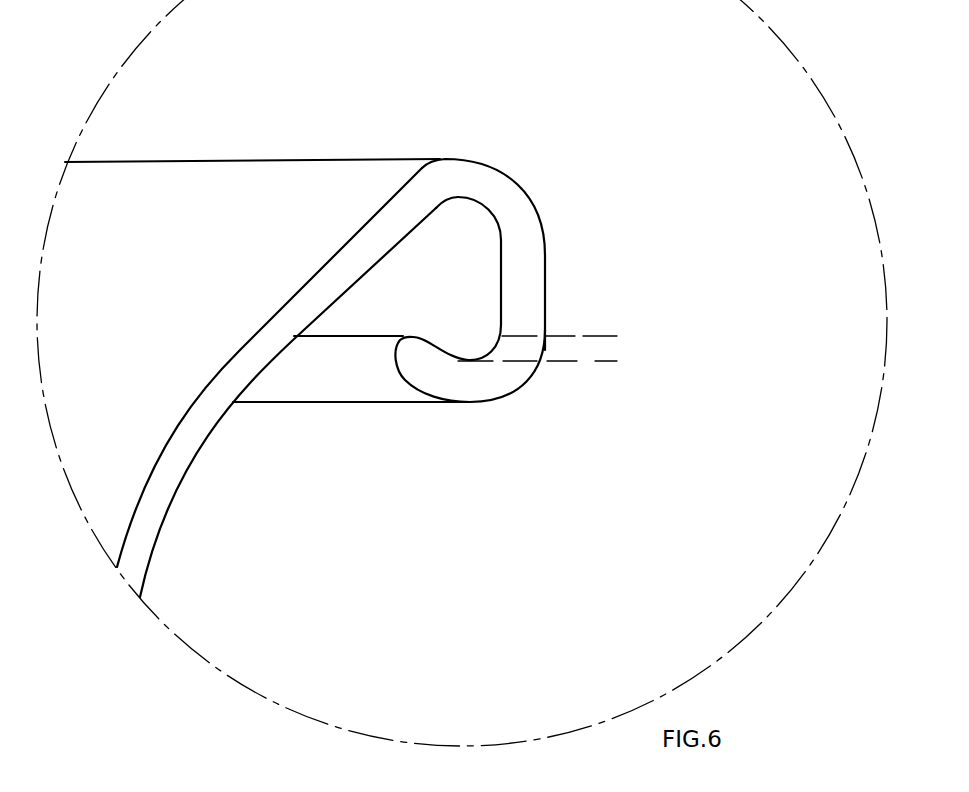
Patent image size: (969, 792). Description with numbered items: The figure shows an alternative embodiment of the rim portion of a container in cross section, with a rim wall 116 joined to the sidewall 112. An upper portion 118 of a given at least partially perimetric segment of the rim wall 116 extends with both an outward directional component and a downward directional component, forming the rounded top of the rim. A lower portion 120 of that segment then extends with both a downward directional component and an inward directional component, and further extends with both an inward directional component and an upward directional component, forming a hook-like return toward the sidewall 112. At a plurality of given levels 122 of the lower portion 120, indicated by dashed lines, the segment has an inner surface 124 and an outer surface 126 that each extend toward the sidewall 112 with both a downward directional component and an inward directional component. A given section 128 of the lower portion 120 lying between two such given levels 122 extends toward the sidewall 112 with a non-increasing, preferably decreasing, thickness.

The sidewall 112 is at (288, 320).
The rim wall 116 is at (310, 159).
The upper portion 118 is at (483, 170).
The lower portion 120 is at (473, 390).
The given levels 122 is at (565, 335).
The inner surface 124 is at (482, 350).
The outer surface 126 is at (545, 348).
The given section 128 is at (510, 348).